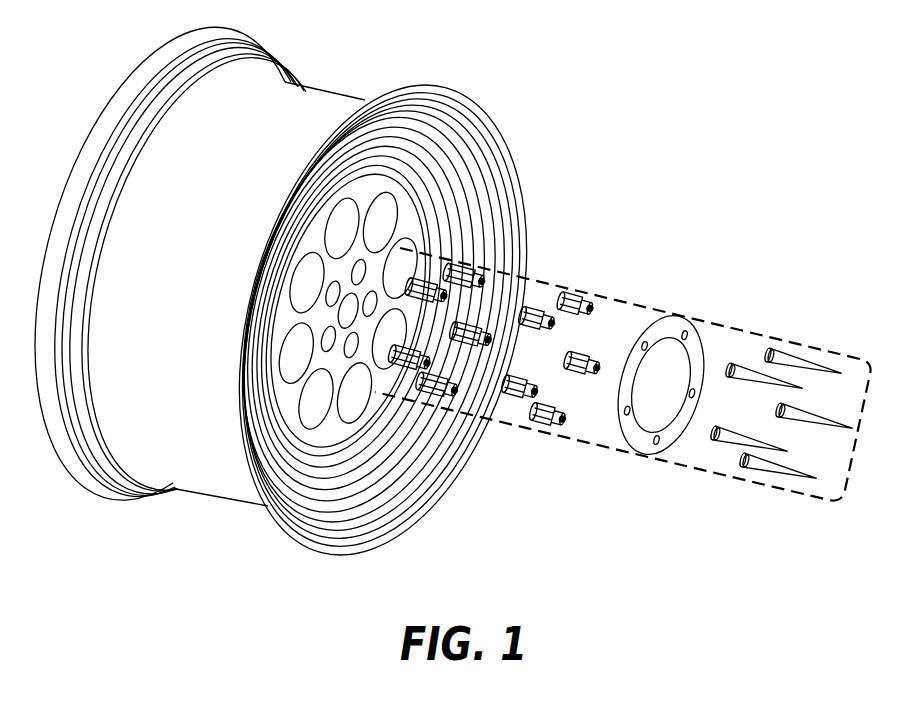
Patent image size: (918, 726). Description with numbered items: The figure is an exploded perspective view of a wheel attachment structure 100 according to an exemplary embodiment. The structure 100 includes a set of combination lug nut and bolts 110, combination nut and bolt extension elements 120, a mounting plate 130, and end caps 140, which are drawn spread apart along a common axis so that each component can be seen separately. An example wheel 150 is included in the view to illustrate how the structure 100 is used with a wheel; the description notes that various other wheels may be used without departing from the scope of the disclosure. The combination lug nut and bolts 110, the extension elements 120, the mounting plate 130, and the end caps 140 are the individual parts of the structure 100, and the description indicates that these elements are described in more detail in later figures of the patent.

The wheel attachment structure 100 is at (767, 488).
The combination lug nut and bolts 110 is at (440, 405).
The combination nut and bolt extension elements 120 is at (568, 290).
The mounting plate 130 is at (614, 425).
The end caps 140 is at (740, 360).
The wheel 150 is at (150, 53).